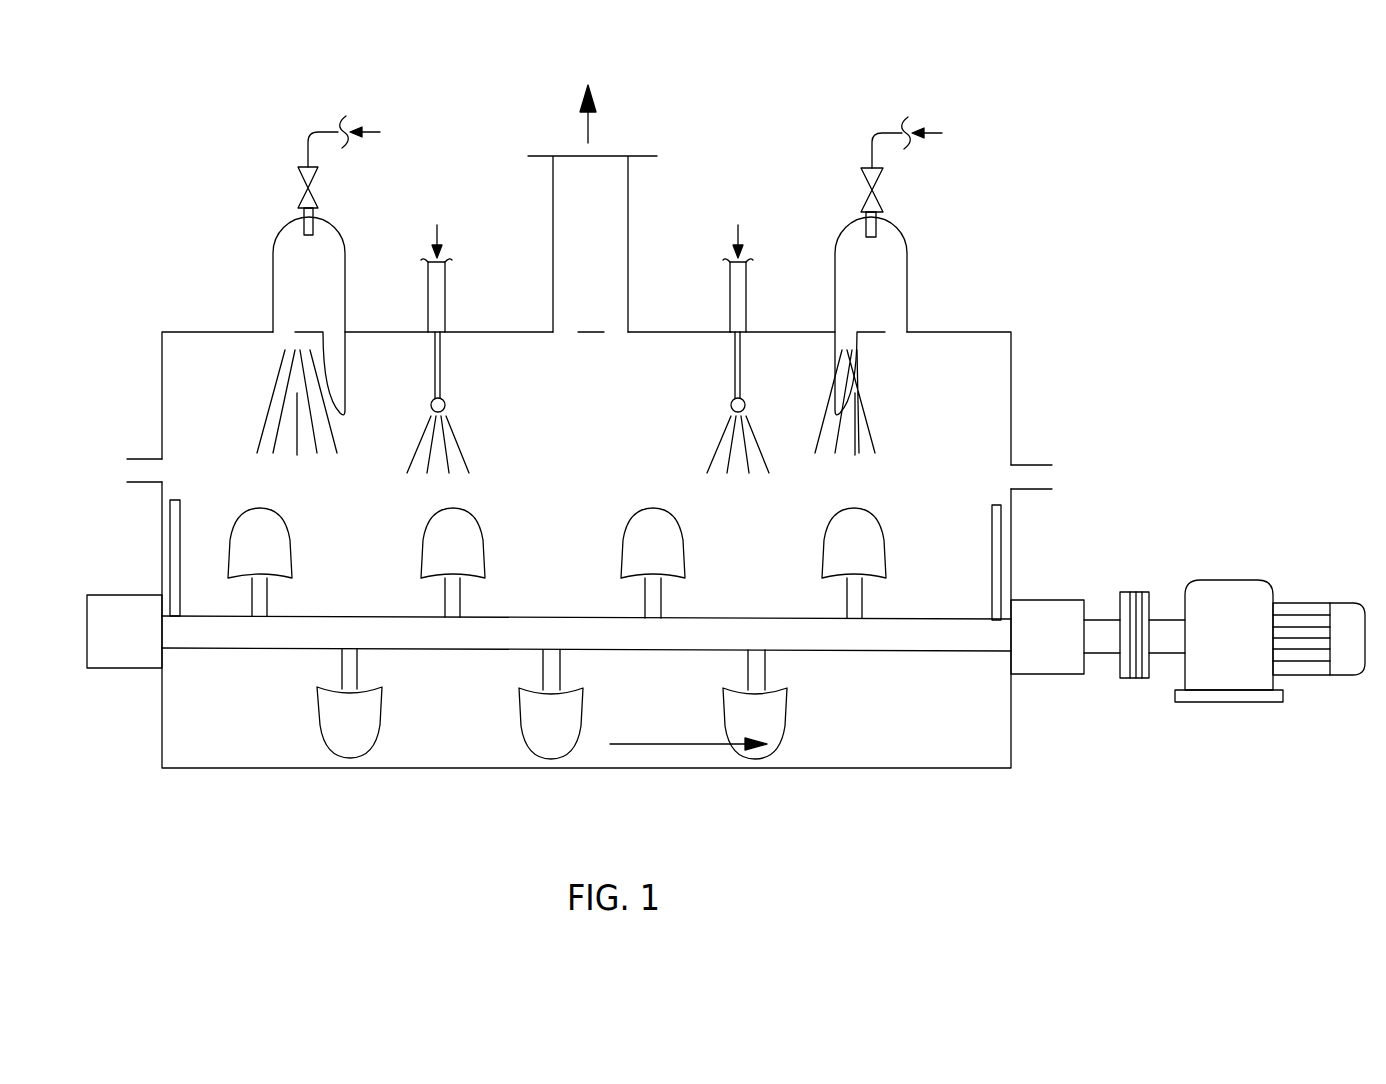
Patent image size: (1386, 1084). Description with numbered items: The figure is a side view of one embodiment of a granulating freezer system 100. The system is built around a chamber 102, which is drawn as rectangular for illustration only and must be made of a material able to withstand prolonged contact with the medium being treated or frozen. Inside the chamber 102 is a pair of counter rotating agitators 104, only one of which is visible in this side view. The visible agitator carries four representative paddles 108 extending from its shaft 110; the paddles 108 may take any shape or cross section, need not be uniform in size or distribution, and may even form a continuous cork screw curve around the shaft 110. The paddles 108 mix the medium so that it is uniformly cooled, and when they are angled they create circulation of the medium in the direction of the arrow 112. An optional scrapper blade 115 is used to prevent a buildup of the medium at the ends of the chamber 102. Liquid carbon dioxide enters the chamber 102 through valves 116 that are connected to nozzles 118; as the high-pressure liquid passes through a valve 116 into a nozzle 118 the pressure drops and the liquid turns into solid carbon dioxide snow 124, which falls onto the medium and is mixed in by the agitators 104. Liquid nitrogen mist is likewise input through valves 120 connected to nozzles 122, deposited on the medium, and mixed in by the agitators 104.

The granulating freezer system 100 is at (1140, 108).
The chamber 102 is at (1012, 762).
The counter rotating agitators 104 is at (213, 636).
The paddles 108 is at (338, 740).
The shaft 110 is at (535, 630).
The arrow 112 is at (683, 742).
The scrapper blade 115 is at (1019, 537).
The valves 116 is at (877, 183).
The nozzles 118 is at (908, 267).
The valves 120 is at (430, 267).
The nozzles 122 is at (444, 405).
The carbon dioxide snow spray 124 is at (907, 383).